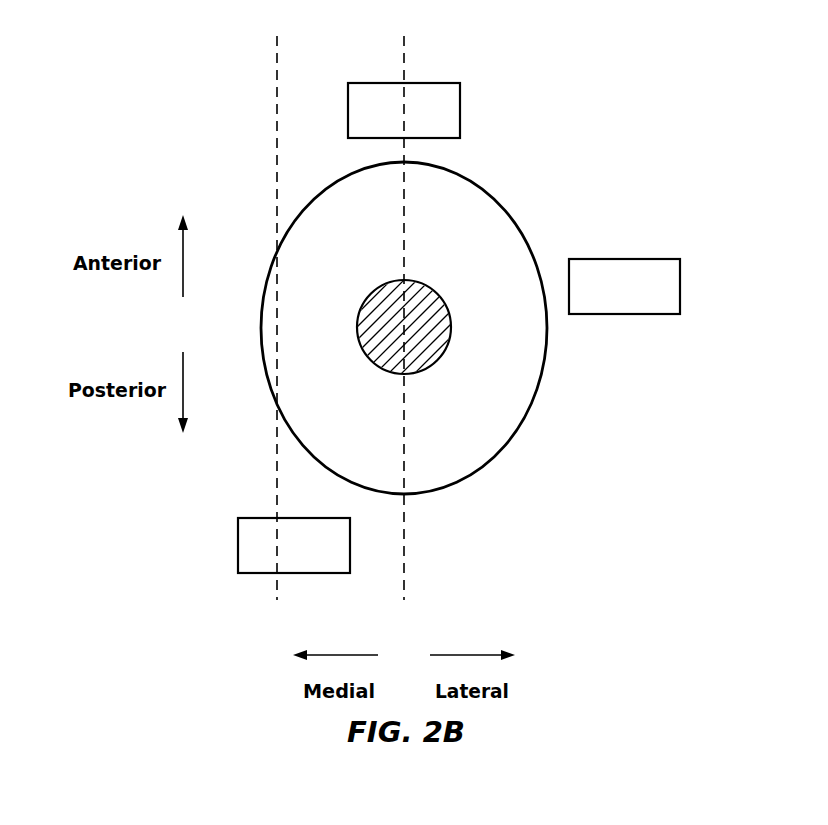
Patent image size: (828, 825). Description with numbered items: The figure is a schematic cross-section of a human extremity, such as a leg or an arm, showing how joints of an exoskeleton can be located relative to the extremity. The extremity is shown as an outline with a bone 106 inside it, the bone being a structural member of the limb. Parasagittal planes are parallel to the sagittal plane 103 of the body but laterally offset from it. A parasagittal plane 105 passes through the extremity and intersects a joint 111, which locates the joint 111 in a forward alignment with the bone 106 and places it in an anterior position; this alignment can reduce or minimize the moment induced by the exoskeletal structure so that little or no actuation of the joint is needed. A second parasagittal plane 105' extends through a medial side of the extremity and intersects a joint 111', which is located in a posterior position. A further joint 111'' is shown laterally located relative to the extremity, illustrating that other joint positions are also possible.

The sagittal plane 103 is at (516, 218).
The bone 106 is at (440, 362).
The parasagittal plane 105 is at (451, 318).
The parasagittal plane 105' is at (221, 318).
The joint 111 is at (450, 110).
The joint 111' is at (241, 545).
The joint 111'' is at (624, 319).